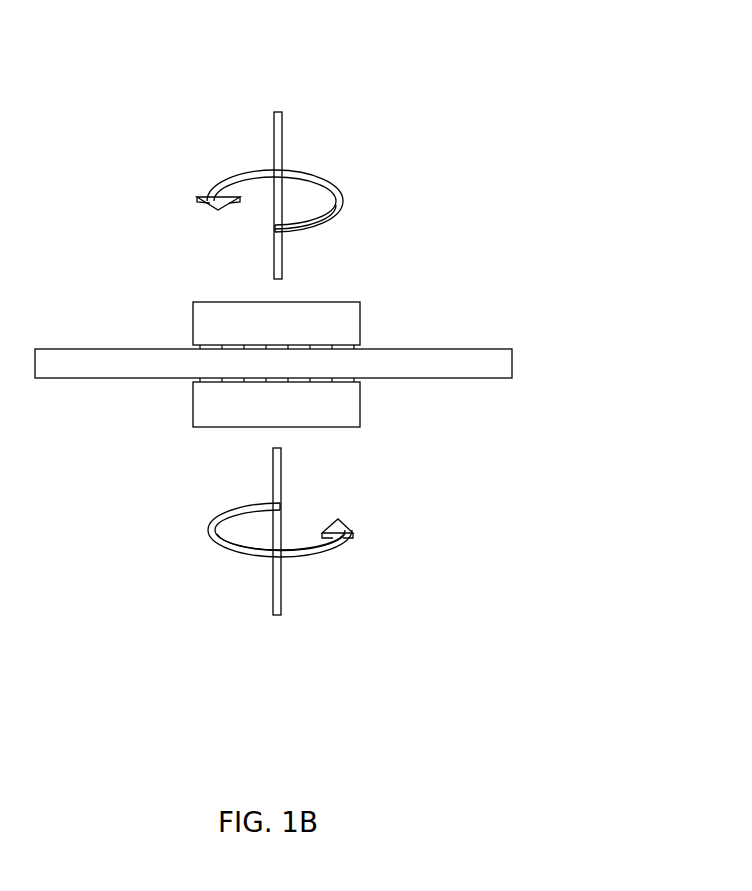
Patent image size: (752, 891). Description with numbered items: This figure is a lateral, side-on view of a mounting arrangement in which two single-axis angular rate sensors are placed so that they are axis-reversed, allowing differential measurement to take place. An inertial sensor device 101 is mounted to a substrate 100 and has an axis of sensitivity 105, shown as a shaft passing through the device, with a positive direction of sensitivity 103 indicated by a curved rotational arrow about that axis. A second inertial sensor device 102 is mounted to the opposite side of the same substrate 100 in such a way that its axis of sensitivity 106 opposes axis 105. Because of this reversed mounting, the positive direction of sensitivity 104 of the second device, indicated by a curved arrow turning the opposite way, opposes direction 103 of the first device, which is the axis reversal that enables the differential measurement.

The substrate 100 is at (512, 363).
The inertial sensor device 101 is at (360, 318).
The second inertial sensor device 102 is at (193, 403).
The positive direction of sensitivity 103 is at (343, 198).
The positive direction of sensitivity 104 is at (355, 530).
The axis of sensitivity 105 is at (282, 131).
The axis of sensitivity 106 is at (273, 569).